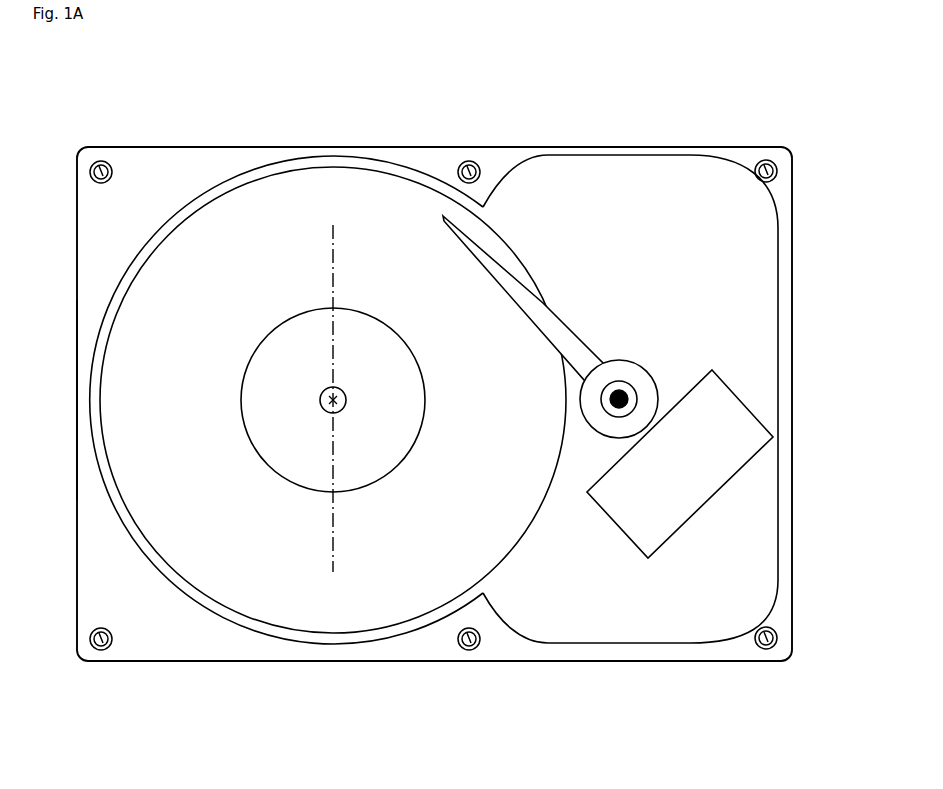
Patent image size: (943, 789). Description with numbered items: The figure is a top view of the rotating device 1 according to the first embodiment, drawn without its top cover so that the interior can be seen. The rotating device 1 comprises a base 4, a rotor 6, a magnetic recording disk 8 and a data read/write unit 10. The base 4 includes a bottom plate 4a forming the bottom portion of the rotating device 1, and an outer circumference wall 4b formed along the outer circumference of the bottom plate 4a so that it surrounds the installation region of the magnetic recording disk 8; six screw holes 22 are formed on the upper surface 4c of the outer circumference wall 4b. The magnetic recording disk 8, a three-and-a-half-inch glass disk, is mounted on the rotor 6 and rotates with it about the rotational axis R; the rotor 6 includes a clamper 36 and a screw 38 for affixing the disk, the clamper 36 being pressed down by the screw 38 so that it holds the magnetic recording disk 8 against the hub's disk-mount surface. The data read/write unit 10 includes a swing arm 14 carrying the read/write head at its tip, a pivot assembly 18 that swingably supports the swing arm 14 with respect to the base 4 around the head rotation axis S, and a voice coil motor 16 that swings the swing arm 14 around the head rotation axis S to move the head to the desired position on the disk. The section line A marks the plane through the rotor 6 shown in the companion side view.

The rotating device 1 is at (458, 417).
The base 4 is at (794, 291).
The bottom plate 4a is at (570, 192).
The outer circumference wall 4b is at (178, 173).
The upper surface 4c is at (87, 221).
The rotor 6 is at (308, 477).
The magnetic recording disk 8 is at (333, 207).
The data read/write unit 10 is at (665, 387).
The swing arm 14 is at (582, 340).
The voice coil motor 16 is at (737, 430).
The pivot assembly 18 is at (643, 383).
The screw holes 22 is at (100, 161).
The clamper 36 is at (288, 403).
The screw for affixing a disk 38 is at (347, 397).
The section line A- A is at (338, 263).
The rotational axis R is at (322, 402).
The head rotation axis S is at (624, 406).